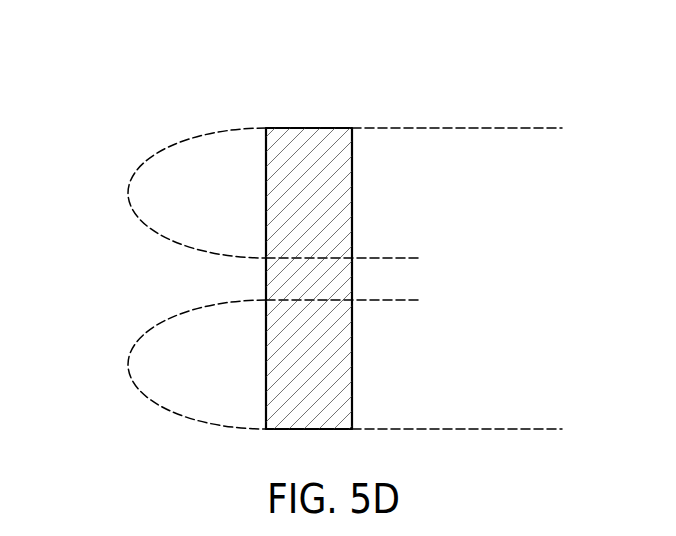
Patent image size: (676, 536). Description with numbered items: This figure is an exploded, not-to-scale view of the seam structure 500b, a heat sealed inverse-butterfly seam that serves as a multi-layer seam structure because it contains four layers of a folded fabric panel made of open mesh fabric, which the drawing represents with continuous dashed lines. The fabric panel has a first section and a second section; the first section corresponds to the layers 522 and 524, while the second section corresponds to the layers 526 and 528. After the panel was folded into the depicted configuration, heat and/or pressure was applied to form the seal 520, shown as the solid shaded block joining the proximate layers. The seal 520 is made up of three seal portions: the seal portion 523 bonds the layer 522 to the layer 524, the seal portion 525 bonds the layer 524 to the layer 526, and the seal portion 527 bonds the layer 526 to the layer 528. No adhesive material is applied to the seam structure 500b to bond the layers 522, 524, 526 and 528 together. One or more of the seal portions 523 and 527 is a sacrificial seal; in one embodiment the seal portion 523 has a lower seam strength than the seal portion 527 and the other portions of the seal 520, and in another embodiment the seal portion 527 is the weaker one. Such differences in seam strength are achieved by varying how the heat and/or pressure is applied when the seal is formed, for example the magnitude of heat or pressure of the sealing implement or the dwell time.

The seam structure 500b is at (123, 82).
The seal 520 is at (253, 230).
The layer 522 is at (353, 129).
The seal portion 523 is at (332, 204).
The layer 524 is at (353, 255).
The seal portion 525 is at (280, 277).
The layer 526 is at (353, 302).
The seal portion 527 is at (331, 378).
The layer 528 is at (353, 428).